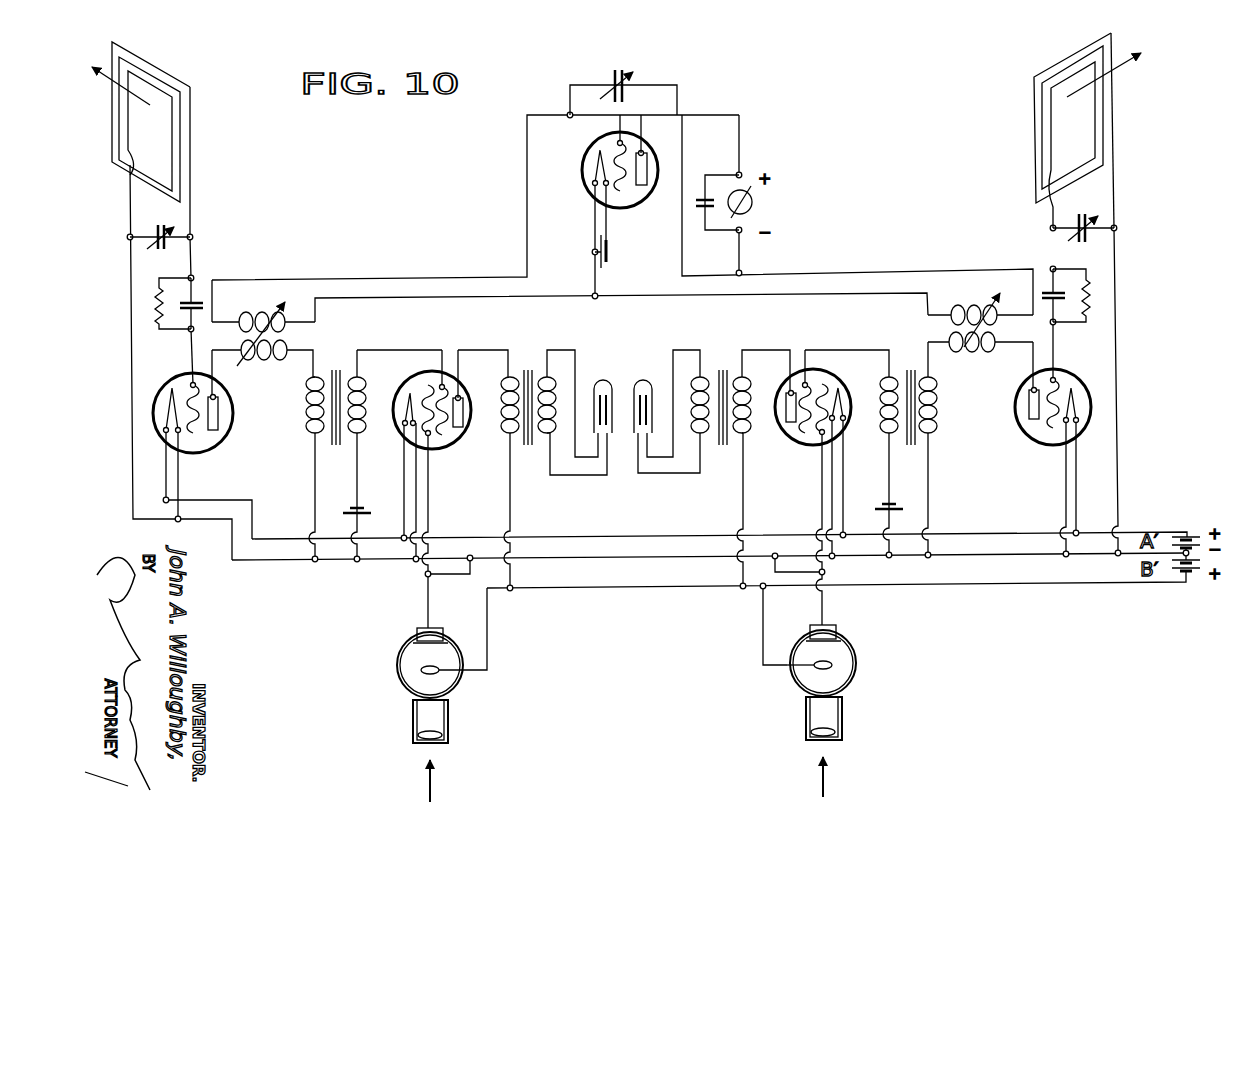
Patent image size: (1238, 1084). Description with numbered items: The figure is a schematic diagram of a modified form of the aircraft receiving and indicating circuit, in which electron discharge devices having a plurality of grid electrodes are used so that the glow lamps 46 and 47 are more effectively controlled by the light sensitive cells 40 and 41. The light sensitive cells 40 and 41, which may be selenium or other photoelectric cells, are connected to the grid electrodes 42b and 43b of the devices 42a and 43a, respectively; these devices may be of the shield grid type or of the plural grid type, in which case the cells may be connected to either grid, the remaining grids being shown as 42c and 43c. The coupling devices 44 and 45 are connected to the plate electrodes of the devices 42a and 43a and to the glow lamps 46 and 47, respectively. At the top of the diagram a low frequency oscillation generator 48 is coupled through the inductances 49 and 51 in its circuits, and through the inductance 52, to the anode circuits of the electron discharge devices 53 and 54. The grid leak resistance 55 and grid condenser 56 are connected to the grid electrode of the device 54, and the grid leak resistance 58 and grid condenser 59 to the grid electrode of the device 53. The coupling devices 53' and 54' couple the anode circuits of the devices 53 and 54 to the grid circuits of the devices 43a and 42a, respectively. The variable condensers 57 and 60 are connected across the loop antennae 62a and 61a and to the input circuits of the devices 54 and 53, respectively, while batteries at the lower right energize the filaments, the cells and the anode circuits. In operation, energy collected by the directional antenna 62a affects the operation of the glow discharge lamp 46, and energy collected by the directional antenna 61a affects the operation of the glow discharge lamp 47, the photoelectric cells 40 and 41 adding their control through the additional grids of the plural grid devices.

The light sensitive cell 40 is at (392, 678).
The light sensitive cell 41 is at (863, 680).
The electron discharge device 42a is at (452, 444).
The grid electrode 42b is at (430, 438).
The grid electrode 42c is at (434, 380).
The electron discharge device 43a is at (790, 440).
The grid electrode 43b is at (822, 437).
The grid electrode 43c is at (812, 384).
The coupling device 44 is at (532, 354).
The coupling device 45 is at (721, 356).
The glow lamp 46 is at (602, 381).
The glow lamp 47 is at (643, 377).
The low frequency oscillation generator 48 is at (583, 174).
The inductance 49 is at (975, 290).
The inductance 51 is at (273, 292).
The inductance 52 is at (270, 359).
The electron discharge device 53 is at (1046, 421).
The coupling device 53' is at (907, 379).
The electron discharge device 54 is at (211, 420).
The coupling device 54' is at (340, 379).
The grid leak resistance 55 is at (157, 308).
The grid condenser 56 is at (198, 288).
The variable condenser 57 is at (183, 230).
The grid leak resistance 58 is at (1094, 310).
The grid condenser 59 is at (1063, 287).
The variable condenser 60 is at (1101, 238).
The loop antenna 61a is at (1034, 134).
The loop antenna 62a is at (191, 158).